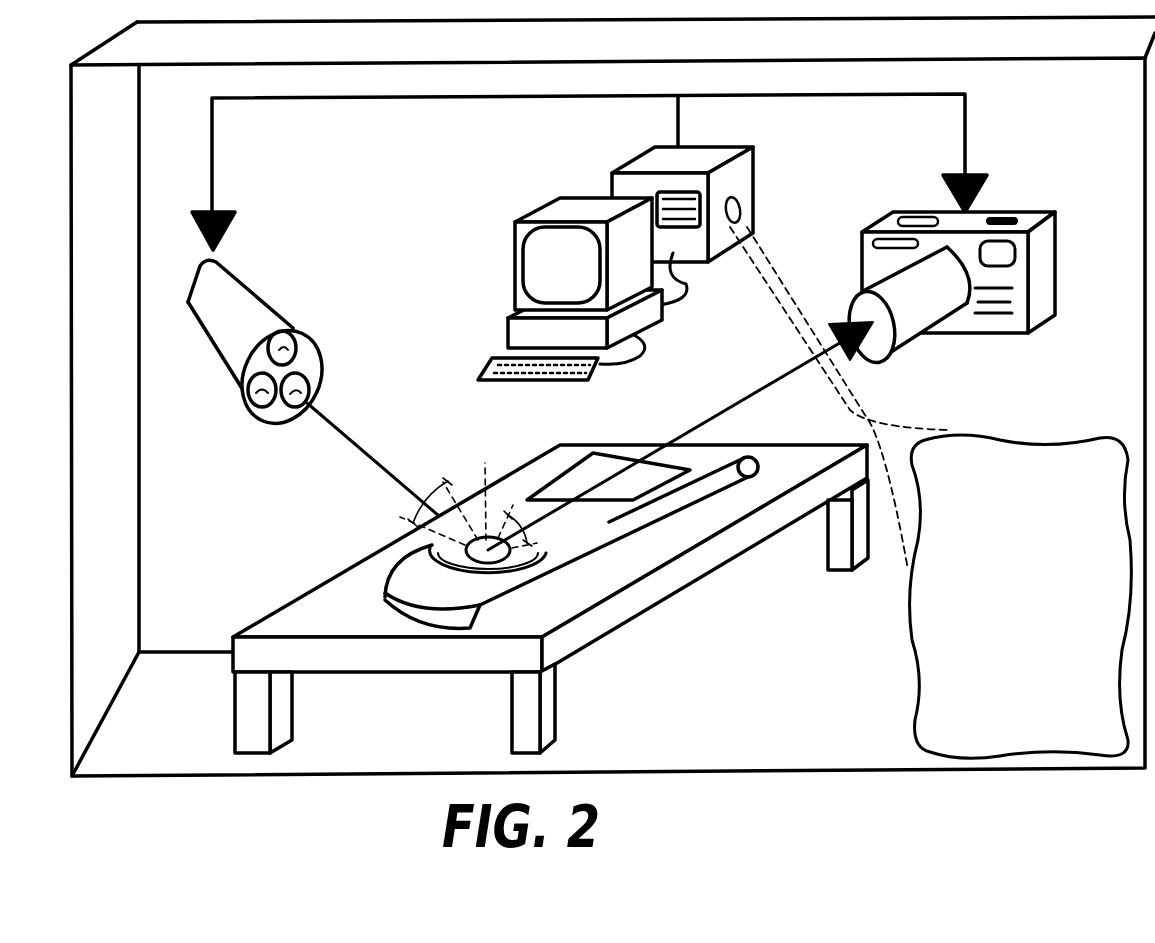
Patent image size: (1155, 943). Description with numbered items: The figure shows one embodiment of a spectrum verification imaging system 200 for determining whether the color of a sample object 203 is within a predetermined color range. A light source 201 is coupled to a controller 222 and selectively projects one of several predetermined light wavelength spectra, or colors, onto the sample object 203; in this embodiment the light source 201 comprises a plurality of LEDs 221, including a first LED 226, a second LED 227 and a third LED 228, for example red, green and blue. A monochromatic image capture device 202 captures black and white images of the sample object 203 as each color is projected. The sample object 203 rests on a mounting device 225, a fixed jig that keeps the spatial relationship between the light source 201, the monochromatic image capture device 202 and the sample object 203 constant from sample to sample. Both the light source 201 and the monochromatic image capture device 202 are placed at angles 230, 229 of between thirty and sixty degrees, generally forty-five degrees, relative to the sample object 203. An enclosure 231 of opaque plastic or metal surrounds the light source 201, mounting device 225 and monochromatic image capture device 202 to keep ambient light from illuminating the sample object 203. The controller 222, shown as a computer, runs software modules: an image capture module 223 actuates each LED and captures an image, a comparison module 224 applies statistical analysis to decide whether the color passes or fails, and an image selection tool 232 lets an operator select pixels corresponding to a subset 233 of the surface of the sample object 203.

The system 200 is at (370, 226).
The light source 201 is at (323, 393).
The monochromatic image capture device 202 is at (1045, 243).
The sample object 203 is at (620, 501).
The LEDs 221 is at (279, 382).
The controller 222 is at (578, 212).
The image capture module 223 is at (976, 596).
The comparison module 224 is at (935, 637).
The mounting device 225 is at (740, 536).
The first LED 226 is at (263, 397).
The second LED 227 is at (296, 326).
The third LED 228 is at (302, 384).
The angle 229 is at (536, 521).
The angle 230 is at (411, 519).
The enclosure 231 is at (613, 396).
The image selection tool 232 is at (935, 724).
The subset 233 is at (533, 558).